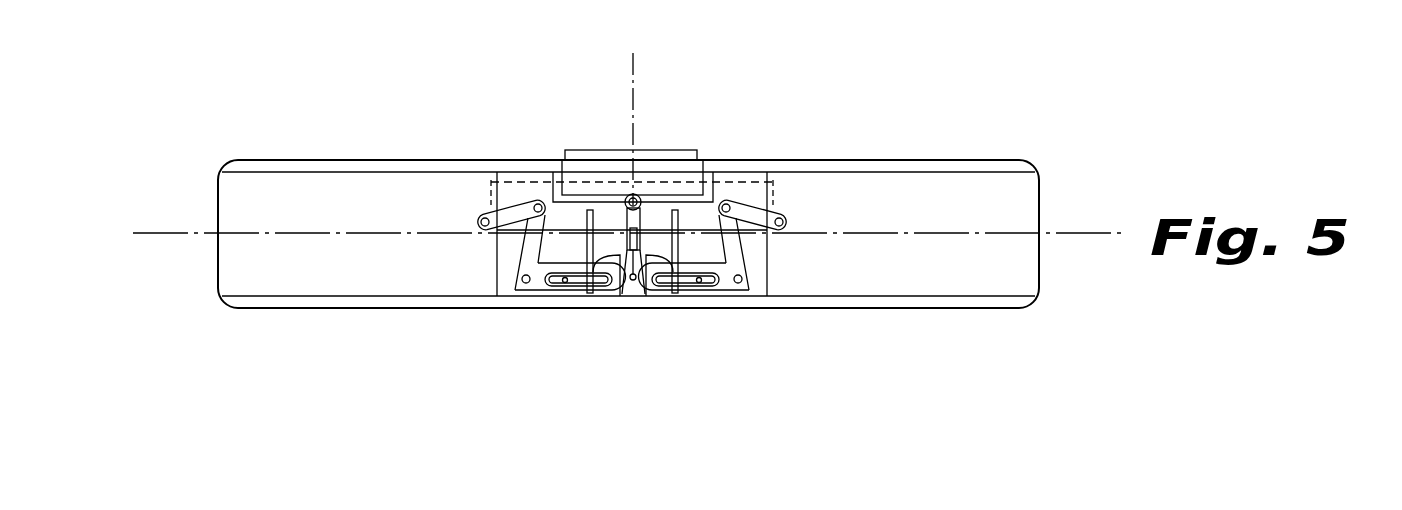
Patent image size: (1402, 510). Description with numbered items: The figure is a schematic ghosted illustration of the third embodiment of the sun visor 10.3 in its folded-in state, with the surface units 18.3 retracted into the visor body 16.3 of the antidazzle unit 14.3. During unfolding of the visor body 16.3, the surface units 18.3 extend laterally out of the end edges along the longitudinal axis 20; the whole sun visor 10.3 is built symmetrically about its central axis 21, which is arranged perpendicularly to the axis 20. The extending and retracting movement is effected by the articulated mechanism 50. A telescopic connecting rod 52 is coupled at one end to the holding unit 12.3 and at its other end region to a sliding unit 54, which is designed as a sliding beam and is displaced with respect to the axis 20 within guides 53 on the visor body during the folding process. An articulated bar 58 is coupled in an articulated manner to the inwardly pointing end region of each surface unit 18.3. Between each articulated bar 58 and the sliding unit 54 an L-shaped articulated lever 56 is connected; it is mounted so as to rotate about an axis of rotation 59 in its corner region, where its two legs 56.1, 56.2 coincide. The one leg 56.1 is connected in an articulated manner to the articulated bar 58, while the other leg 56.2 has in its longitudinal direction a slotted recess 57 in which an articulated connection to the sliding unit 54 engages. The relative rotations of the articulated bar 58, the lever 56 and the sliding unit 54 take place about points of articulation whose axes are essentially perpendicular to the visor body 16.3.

The sun visor 10.3 is at (291, 142).
The holding unit 12.3 is at (680, 150).
The antidazzle unit 14.3 is at (1012, 337).
The visor body 16.3 is at (957, 287).
The surface units 18.3 is at (402, 188).
The longitudinal axis 20 is at (170, 230).
The central axis 21 is at (633, 87).
The articulated mechanism 50 is at (499, 271).
The connecting rod 52 is at (641, 196).
The guides 53 is at (638, 293).
The sliding unit 54 is at (624, 197).
The L-shaped articulated lever 56 is at (668, 247).
The leg 56.1 is at (524, 220).
The leg 56.2 is at (537, 283).
The slotted recess 57 is at (568, 283).
The articulated bar 58 is at (510, 214).
The axis of rotation 59 is at (527, 283).